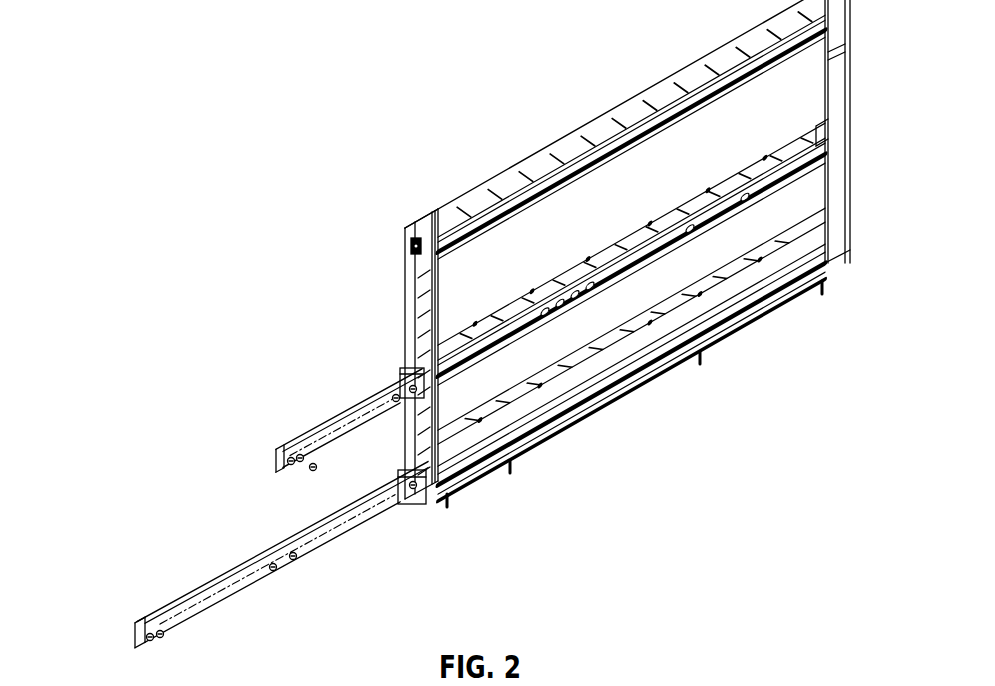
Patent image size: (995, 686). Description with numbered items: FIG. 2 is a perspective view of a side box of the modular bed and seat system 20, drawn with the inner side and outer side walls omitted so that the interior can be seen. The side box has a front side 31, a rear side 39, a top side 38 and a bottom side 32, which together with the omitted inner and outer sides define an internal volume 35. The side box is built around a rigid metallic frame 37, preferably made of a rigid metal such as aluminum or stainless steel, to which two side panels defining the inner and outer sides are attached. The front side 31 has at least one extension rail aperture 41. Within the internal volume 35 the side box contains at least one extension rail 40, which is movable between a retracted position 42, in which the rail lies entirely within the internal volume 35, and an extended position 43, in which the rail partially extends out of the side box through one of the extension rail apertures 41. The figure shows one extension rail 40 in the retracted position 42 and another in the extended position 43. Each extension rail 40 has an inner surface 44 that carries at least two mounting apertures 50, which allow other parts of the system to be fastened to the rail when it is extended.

The rack assembly 20 is at (778, 681).
The front side 31 is at (413, 297).
The bottom side 32 is at (472, 480).
The internal volume 35 is at (837, 57).
The rigid metallic frame 37 is at (852, 172).
The top side 38 is at (687, 77).
The rear side 39 is at (822, 97).
The extension rail 40 is at (471, 222).
The extension rail aperture 41 is at (406, 366).
The retracted position 42 is at (357, 237).
The extended position 43 is at (118, 619).
The inner surface 44 is at (633, 267).
The mounting aperture 50 is at (393, 409).